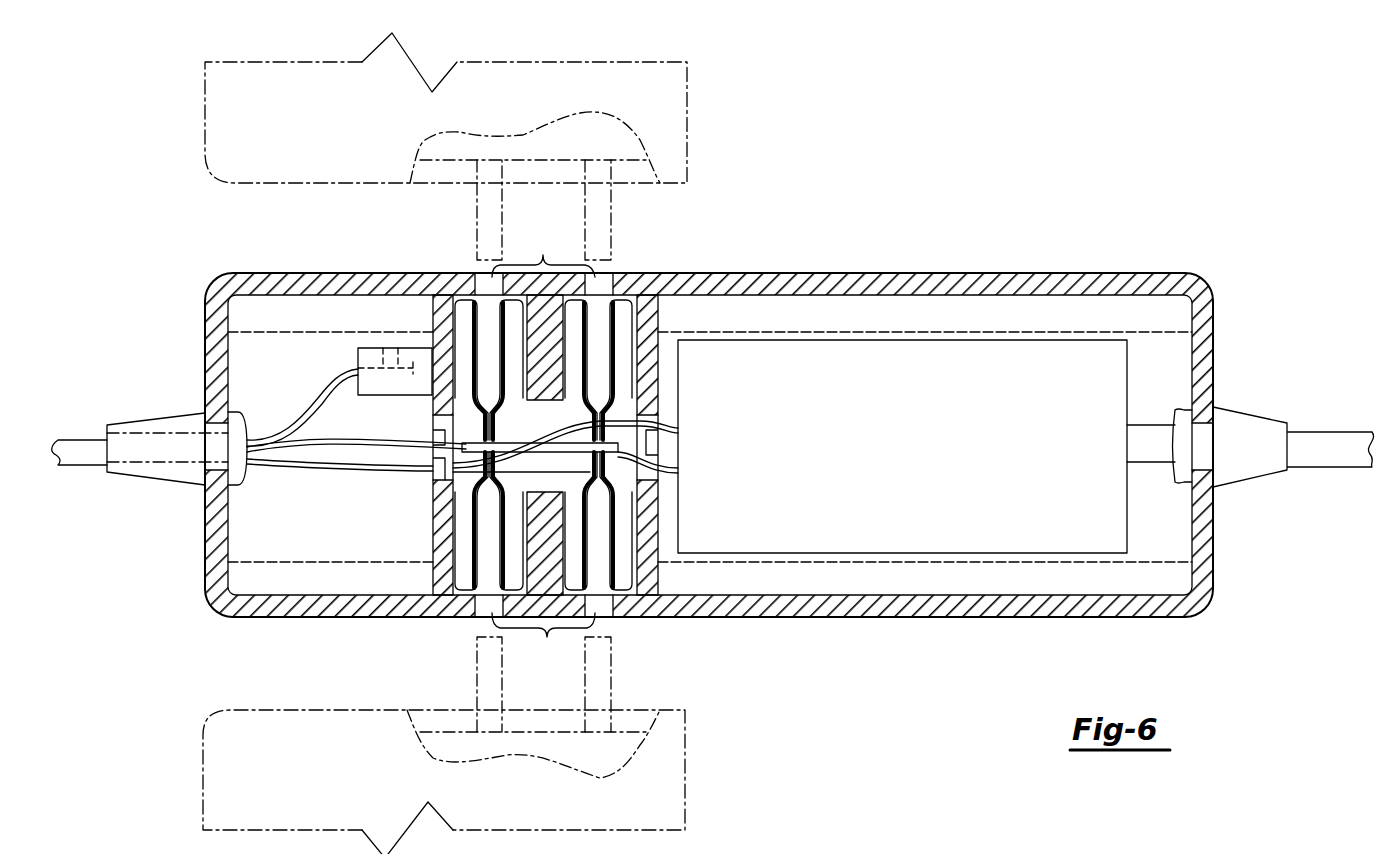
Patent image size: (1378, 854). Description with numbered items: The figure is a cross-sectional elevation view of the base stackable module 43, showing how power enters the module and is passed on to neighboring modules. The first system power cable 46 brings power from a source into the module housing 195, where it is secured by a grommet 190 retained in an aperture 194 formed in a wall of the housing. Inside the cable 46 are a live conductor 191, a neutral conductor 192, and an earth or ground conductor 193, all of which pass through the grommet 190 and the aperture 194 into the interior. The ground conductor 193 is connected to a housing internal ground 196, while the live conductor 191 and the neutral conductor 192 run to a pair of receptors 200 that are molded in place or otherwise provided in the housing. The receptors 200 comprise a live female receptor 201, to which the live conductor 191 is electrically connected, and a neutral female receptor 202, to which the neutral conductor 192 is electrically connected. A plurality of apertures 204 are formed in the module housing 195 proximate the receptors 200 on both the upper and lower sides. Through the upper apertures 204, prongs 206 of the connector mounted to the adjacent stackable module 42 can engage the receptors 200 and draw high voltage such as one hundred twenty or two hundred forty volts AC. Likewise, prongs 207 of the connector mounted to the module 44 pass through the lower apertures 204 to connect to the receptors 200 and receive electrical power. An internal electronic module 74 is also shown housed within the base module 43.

The stackable module 42 is at (205, 117).
The base stackable module 43 is at (203, 580).
The module 44 is at (205, 772).
The first system power cable 46 is at (72, 432).
The electronic module 74 is at (912, 459).
The grommet 190 is at (165, 414).
The live conductor 191 is at (364, 439).
The neutral conductor 192 is at (322, 466).
The ground conductor 193 is at (292, 416).
The aperture 194 is at (214, 470).
The module housing 195 is at (884, 271).
The housing internal ground 196 is at (378, 348).
The receptors 200 is at (580, 407).
The live female receptor 201 is at (433, 534).
The neutral female receptor 202 is at (646, 322).
The apertures 204 is at (543, 255).
The prongs 206 is at (613, 203).
The prongs 207 is at (475, 703).